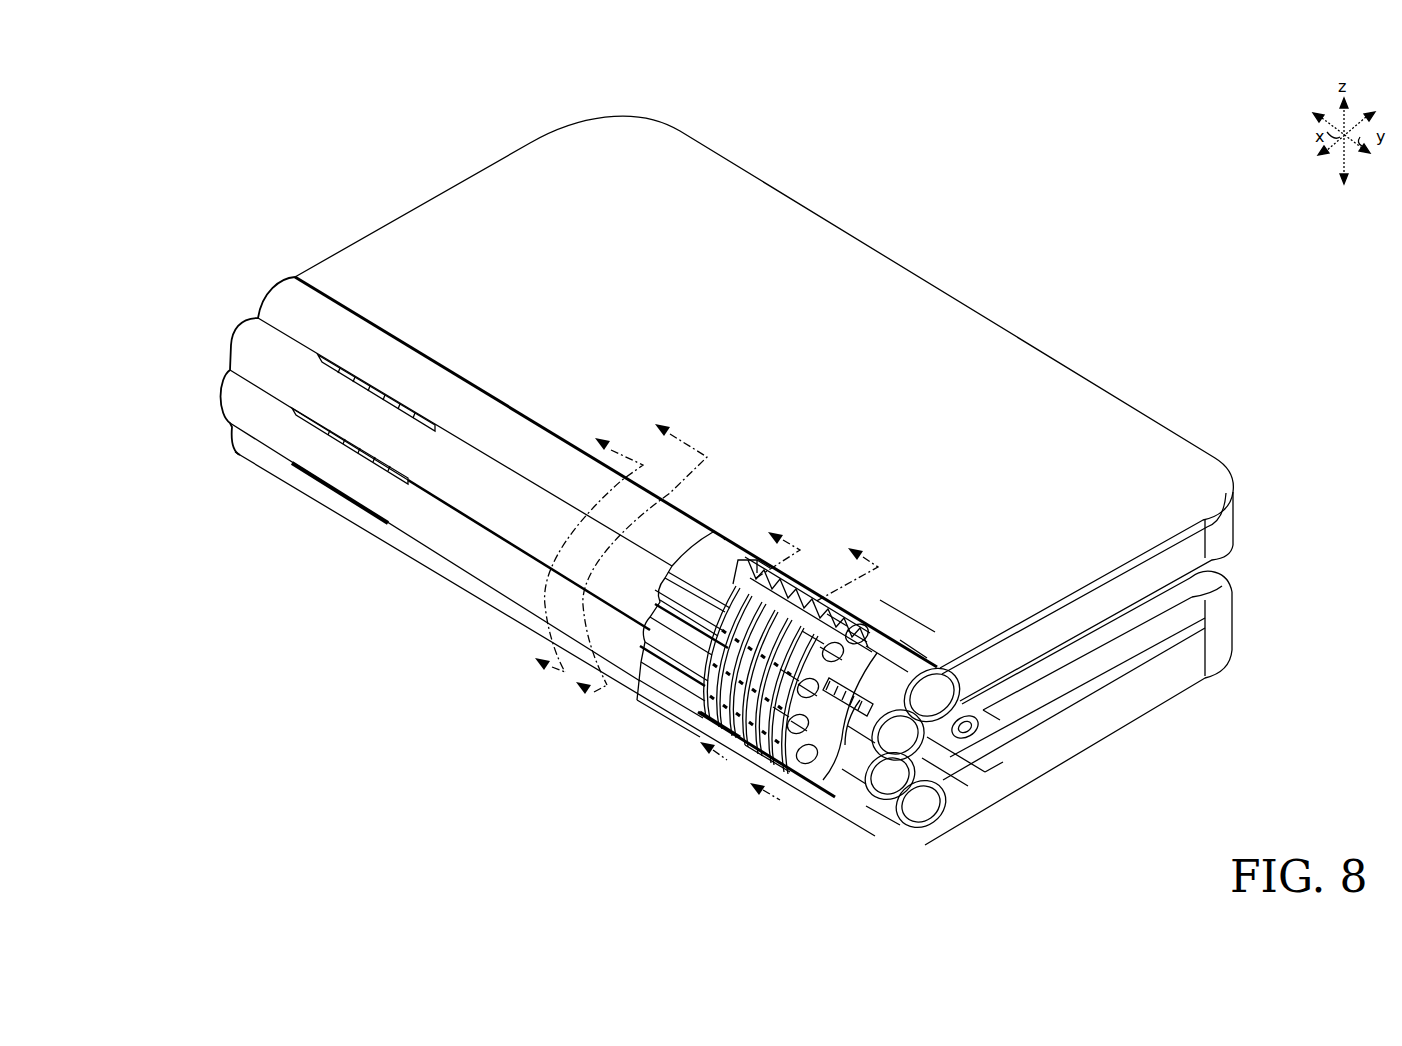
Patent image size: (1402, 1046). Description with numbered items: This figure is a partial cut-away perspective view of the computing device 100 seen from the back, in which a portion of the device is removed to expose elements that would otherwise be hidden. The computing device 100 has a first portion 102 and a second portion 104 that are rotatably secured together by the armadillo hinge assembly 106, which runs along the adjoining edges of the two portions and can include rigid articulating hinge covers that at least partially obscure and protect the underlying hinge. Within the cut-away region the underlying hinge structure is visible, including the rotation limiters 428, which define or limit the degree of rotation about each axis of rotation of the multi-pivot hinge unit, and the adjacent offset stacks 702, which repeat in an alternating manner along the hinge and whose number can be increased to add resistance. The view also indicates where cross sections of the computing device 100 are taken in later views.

The computing device 100 is at (278, 147).
The first portion 102 is at (922, 274).
The second portion 104 is at (1120, 728).
The armadillo hinge assembly 106 is at (596, 557).
The rotation limiters 428 is at (690, 720).
The stacks 702 is at (742, 770).